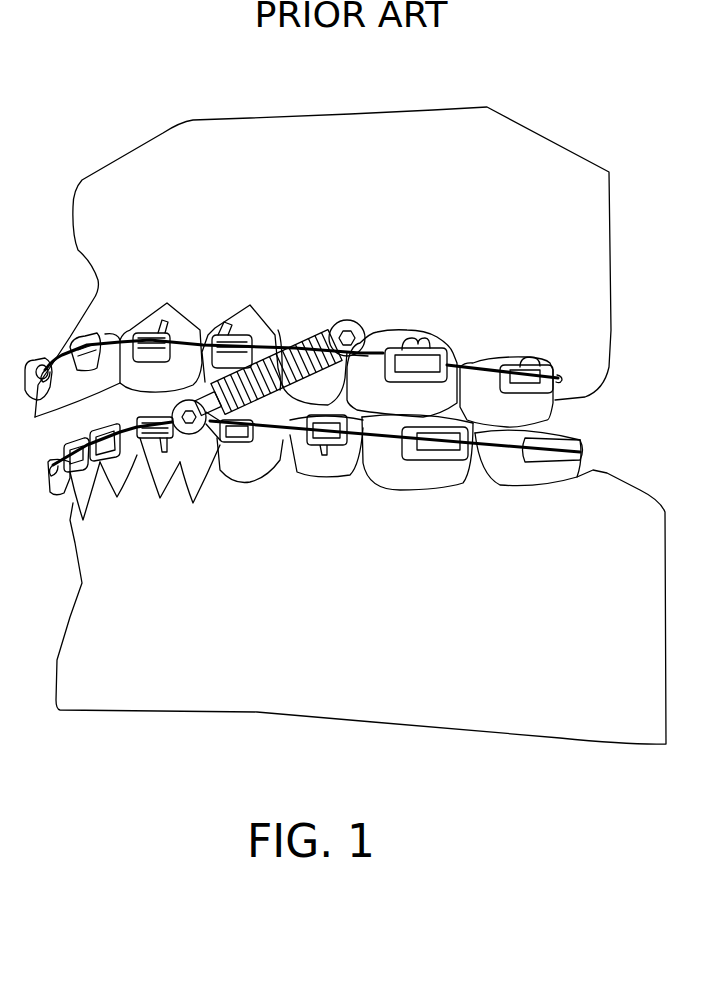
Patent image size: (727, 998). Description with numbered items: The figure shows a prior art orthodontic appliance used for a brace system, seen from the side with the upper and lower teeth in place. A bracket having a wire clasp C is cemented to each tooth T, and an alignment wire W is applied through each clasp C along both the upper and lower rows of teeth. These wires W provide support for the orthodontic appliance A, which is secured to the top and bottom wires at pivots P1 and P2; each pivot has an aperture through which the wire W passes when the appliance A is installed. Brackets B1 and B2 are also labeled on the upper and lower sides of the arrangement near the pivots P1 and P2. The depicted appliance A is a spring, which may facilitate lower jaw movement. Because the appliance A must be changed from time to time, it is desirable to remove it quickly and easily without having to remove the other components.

The wire clasp C is at (148, 320).
The tooth T is at (250, 305).
The orthodontic appliance A is at (278, 330).
The upper bracket B1 is at (323, 327).
The pivot P1 is at (362, 328).
The alignment wire W is at (465, 360).
The pivot P2 is at (185, 437).
The lower bracket B2 is at (227, 442).